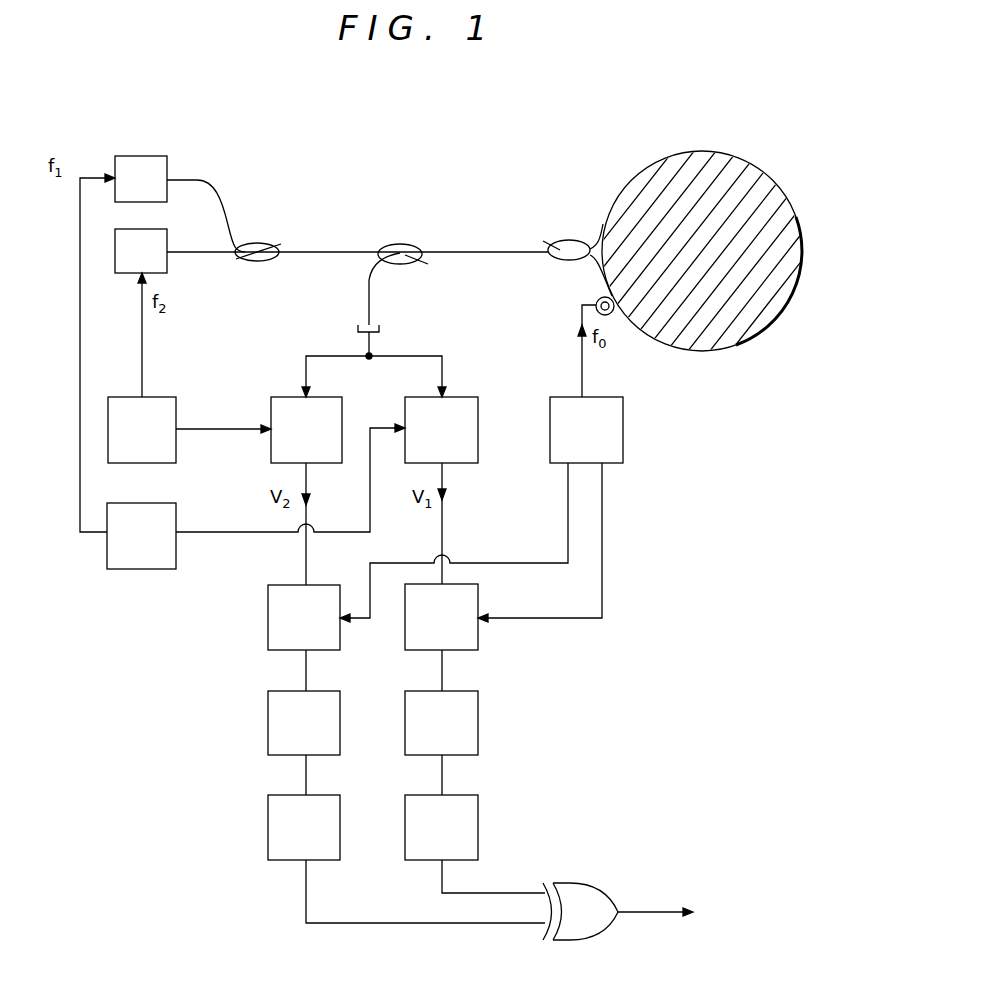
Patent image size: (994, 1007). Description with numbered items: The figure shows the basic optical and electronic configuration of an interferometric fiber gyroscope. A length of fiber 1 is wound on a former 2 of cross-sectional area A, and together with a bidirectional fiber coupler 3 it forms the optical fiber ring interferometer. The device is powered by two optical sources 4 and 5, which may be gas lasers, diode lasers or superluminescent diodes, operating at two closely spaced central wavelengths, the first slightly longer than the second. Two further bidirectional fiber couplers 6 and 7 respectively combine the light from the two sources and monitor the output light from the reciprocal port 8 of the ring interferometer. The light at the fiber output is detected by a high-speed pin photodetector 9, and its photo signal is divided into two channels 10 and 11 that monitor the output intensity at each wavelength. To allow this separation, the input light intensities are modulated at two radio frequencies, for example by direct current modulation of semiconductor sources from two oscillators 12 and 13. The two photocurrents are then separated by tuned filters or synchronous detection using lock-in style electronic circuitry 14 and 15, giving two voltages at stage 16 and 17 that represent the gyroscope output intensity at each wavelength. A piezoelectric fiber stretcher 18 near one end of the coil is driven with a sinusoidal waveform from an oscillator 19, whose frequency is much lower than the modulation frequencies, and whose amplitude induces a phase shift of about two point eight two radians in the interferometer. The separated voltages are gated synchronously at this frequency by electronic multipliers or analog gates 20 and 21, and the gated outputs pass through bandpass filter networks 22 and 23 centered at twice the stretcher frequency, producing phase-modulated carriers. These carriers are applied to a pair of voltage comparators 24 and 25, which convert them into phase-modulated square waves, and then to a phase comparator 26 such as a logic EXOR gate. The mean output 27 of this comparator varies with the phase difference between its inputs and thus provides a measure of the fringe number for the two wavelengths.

The length of fiber 1 is at (712, 351).
The former 2 is at (642, 210).
The cross-sectional area A is at (737, 167).
The bidirectional fiber coupler 3 is at (569, 240).
The optical source 4 is at (163, 156).
The optical source 5 is at (168, 236).
The bidirectional fiber coupler 6 is at (258, 243).
The bidirectional fiber coupler 7 is at (402, 244).
The reciprocal port 8 is at (372, 286).
The high-speed pin photodetector 9 is at (357, 328).
The channel 10 is at (306, 358).
The channel 11 is at (442, 362).
The oscillator 12 is at (256, 496).
The oscillator 13 is at (189, 430).
The electronic circuitry 14 is at (441, 430).
The electronic circuitry 15 is at (306, 430).
The stage 16 is at (455, 523).
The stage 17 is at (319, 524).
The piezoelectric fiber stretcher 18 is at (595, 303).
The oscillator 19 is at (481, 509).
The analog gate 20 is at (441, 617).
The analog gate 21 is at (304, 617).
The bandpass filter network 22 is at (441, 723).
The bandpass filter network 23 is at (304, 723).
The voltage comparator 24 is at (441, 827).
The voltage comparator 25 is at (304, 827).
The phase comparator 26 is at (580, 911).
The mean output 27 is at (656, 897).